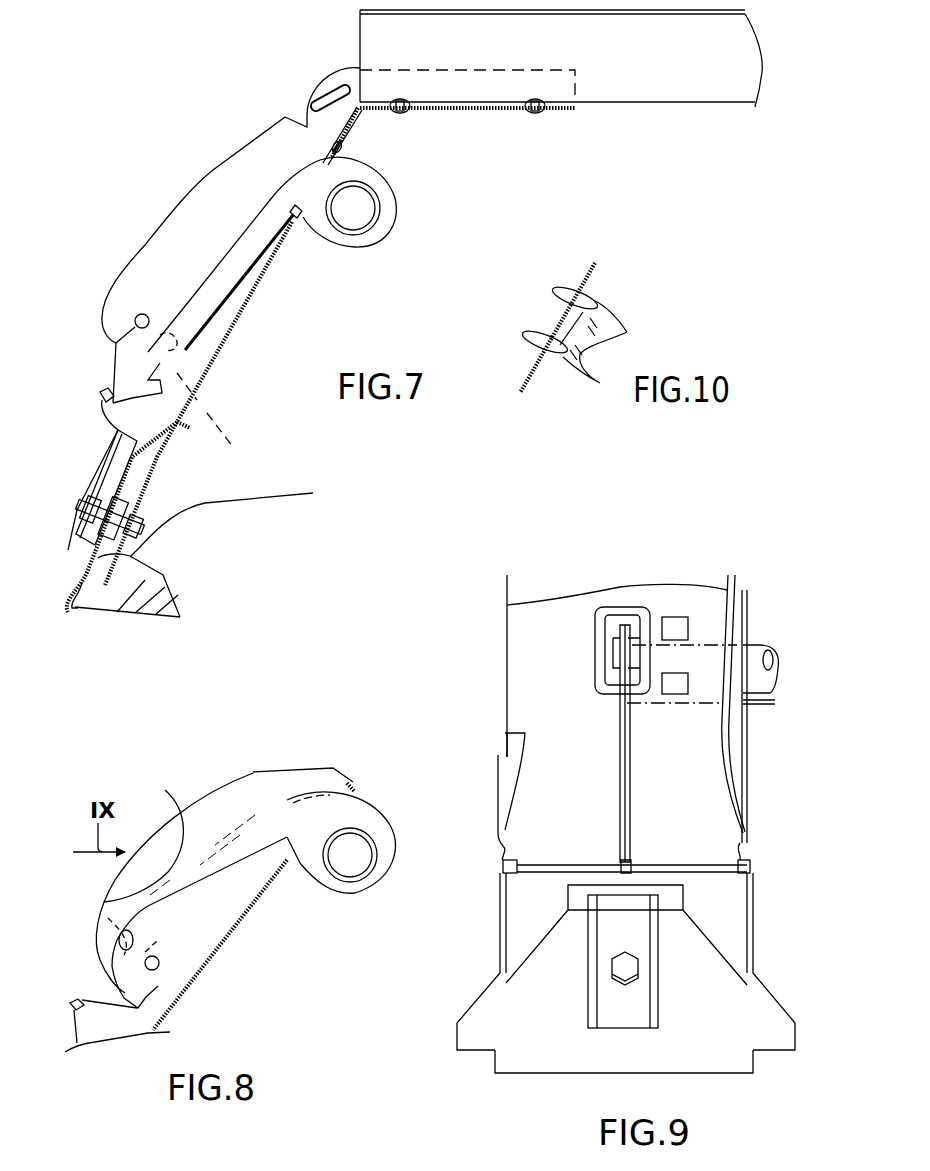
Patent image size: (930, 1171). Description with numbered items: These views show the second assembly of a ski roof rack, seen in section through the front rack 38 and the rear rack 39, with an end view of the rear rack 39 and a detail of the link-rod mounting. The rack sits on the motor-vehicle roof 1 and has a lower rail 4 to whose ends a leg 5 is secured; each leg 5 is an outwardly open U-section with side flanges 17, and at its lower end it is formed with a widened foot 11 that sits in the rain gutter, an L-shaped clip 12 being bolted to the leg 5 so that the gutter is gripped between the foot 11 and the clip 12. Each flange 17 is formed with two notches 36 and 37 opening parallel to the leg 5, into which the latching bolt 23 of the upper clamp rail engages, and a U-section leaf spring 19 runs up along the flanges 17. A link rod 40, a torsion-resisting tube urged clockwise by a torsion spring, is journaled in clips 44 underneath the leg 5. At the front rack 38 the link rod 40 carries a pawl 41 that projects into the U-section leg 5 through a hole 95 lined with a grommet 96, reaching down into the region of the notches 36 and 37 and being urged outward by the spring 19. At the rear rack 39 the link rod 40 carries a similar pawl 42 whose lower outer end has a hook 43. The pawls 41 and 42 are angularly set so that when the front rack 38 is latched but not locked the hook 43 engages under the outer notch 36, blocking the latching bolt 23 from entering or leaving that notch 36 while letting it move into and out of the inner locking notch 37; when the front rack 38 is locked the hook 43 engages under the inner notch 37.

In FIG. 7, the motor-vehicle roof 1 is at (225, 497).
In FIG. 7, the lower rail 4 is at (707, 82).
In FIG. 7, the leg 5 is at (212, 365).
In FIG. 10, the leg 5 is at (533, 385).
In FIG. 8, the leg 5 is at (265, 895).
In FIG. 7, the foot 11 is at (165, 575).
In FIG. 9, the foot 11 is at (775, 1018).
In FIG. 9, the L-shaped clip 12 is at (521, 1055).
In FIG. 7, the side flanges 17 is at (193, 248).
In FIG. 9, the side flanges 17 is at (507, 758).
In FIG. 9, the leaf spring 19 is at (535, 873).
In FIG. 7, the latching bolt 23 is at (135, 328).
In FIG. 8, the latching bolt 23 is at (160, 962).
In FIG. 8, the notch 36 is at (144, 834).
In FIG. 7, the inner locking notch 37 is at (205, 403).
In FIG. 8, the inner locking notch 37 is at (160, 985).
In FIG. 7, the front rack 38 is at (332, 73).
In FIG. 9, the rear rack 39 is at (750, 582).
In FIG. 7, the link rod 40 is at (381, 215).
In FIG. 8, the link rod 40 is at (370, 870).
In FIG. 9, the link rod 40 is at (752, 656).
In FIG. 7, the pawl 41 is at (253, 240).
In FIG. 8, the pawl 42 is at (332, 825).
In FIG. 9, the pawl 42 is at (622, 815).
In FIG. 8, the hook 43 is at (104, 914).
In FIG. 10, the clips 44 is at (600, 310).
In FIG. 9, the clips 44 is at (671, 697).
In FIG. 7, the hole 95 is at (342, 155).
In FIG. 9, the hole 95 is at (608, 635).
In FIG. 7, the grommet 96 is at (345, 147).
In FIG. 9, the grommet 96 is at (598, 618).